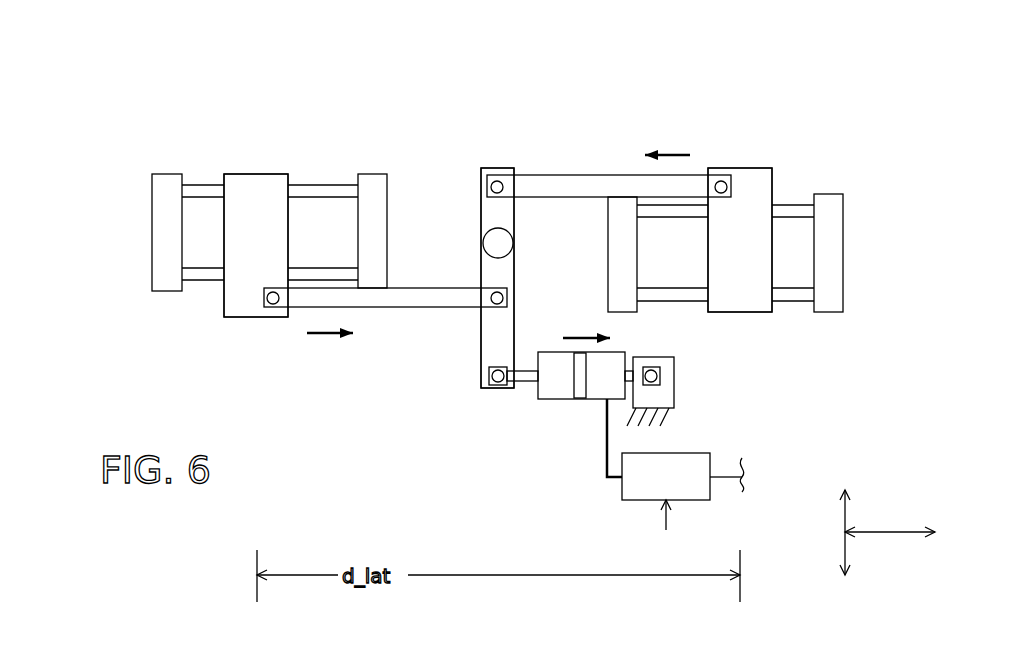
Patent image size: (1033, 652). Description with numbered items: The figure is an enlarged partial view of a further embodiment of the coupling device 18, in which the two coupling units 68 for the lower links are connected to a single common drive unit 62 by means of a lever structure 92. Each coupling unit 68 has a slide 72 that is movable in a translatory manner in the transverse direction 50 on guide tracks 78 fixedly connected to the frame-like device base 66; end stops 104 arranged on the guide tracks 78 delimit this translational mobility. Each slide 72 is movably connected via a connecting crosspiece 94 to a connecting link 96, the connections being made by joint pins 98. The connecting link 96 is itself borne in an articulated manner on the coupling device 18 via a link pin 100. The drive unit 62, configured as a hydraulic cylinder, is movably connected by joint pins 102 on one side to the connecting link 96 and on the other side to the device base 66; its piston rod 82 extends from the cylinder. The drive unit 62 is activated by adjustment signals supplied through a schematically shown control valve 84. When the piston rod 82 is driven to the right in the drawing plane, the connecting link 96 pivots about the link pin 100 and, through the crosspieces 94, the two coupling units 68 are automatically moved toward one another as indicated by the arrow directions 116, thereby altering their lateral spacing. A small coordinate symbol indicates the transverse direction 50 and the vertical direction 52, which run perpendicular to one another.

The coupling device 18 is at (685, 418).
The transverse direction 50 is at (906, 530).
The vertical direction 52 is at (848, 545).
The drive unit 62 is at (585, 402).
The device base 66 is at (665, 392).
The coupling unit 68 is at (242, 170).
The slide 72 is at (274, 176).
The guide track 78 is at (197, 290).
The piston rod 82 is at (523, 385).
The control valve 84 is at (675, 481).
The lever structure 92 is at (472, 150).
The connecting crosspiece 94 is at (553, 176).
The connecting link 96 is at (481, 345).
The joint pin 98 is at (497, 170).
The link pin 100 is at (487, 243).
The joint pin 102 is at (495, 385).
The end stop 104 is at (165, 176).
The arrow direction 116 is at (678, 150).